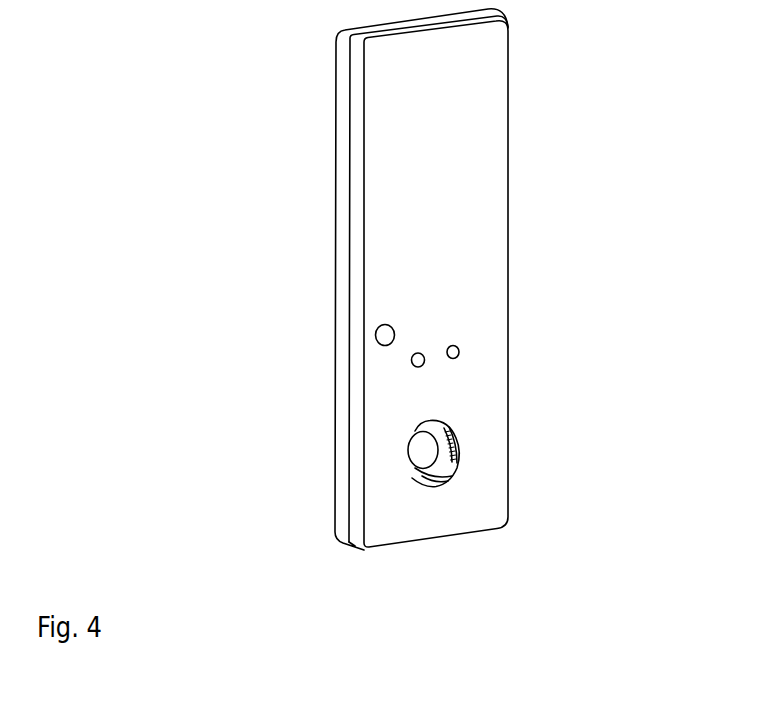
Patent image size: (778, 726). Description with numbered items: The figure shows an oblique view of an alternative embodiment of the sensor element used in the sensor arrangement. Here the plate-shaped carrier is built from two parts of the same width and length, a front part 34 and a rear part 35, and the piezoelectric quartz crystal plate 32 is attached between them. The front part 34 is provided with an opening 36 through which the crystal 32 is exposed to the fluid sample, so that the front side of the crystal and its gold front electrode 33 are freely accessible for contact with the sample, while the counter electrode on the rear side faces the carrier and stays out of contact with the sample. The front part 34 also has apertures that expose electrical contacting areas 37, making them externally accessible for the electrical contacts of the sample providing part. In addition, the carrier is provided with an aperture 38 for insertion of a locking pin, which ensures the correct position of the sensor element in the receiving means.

The piezoelectric quartz crystal plate 32 is at (445, 466).
The front electrode 33 is at (421, 450).
The front part 34 is at (361, 118).
The rear part 35 is at (341, 58).
The opening 36 is at (452, 465).
The electrical contacting areas 37 is at (449, 354).
The aperture 38 is at (382, 334).